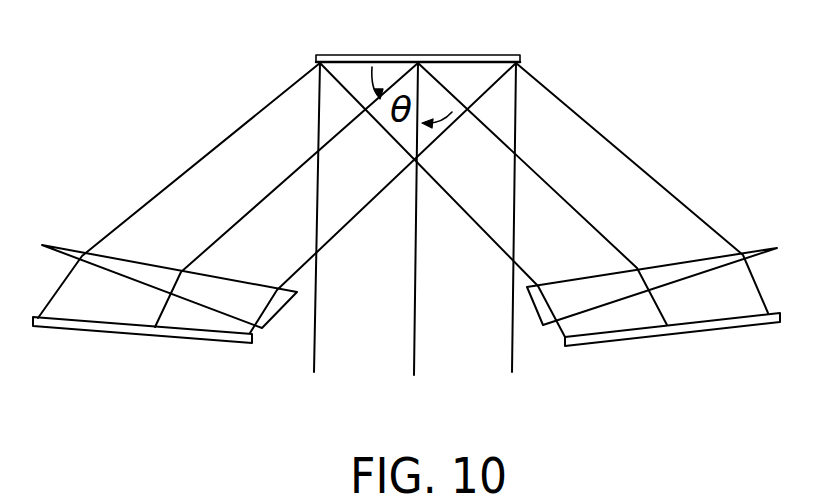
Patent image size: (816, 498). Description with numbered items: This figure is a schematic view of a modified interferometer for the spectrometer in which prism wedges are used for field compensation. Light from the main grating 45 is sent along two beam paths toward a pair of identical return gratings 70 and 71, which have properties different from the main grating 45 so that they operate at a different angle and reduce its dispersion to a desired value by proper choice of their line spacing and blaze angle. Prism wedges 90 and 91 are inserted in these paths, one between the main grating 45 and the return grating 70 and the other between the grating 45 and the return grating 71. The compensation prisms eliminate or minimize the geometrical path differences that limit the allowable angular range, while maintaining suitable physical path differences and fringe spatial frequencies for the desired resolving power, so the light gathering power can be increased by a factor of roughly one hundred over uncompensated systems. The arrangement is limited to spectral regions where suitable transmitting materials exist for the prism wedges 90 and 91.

The main grating 45 is at (482, 56).
The prism wedge 90 is at (135, 260).
The prism wedge 91 is at (670, 266).
The return grating 70 is at (208, 339).
The return grating 71 is at (613, 343).